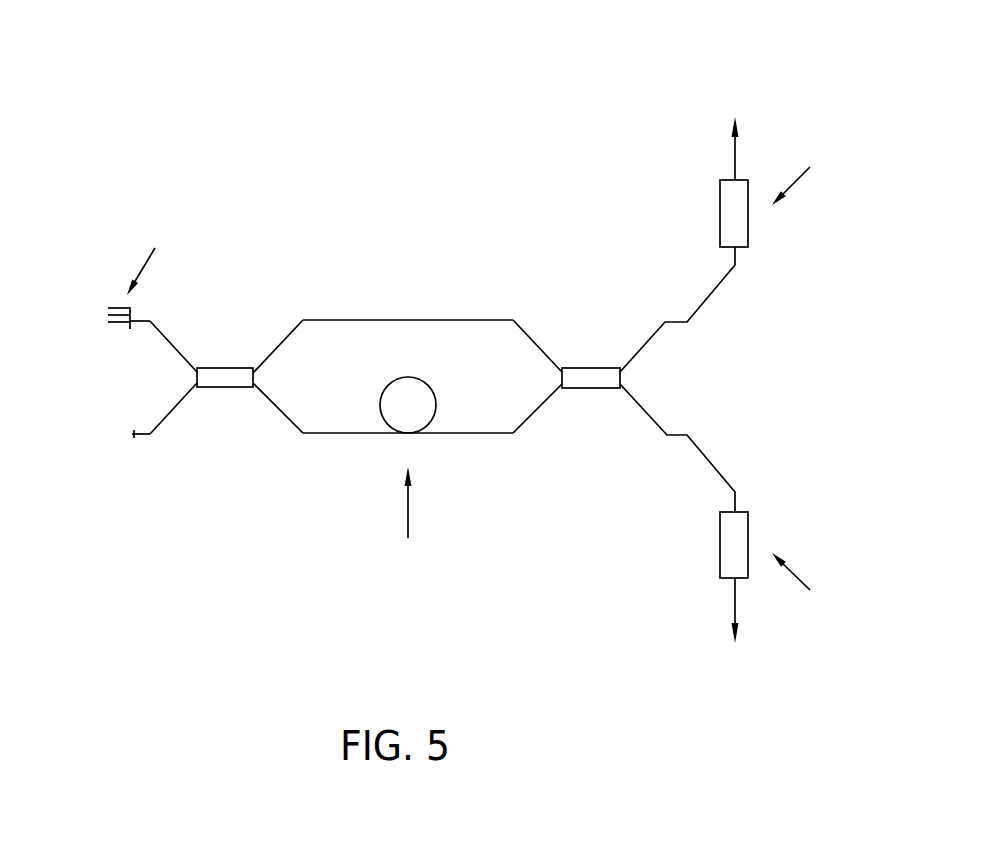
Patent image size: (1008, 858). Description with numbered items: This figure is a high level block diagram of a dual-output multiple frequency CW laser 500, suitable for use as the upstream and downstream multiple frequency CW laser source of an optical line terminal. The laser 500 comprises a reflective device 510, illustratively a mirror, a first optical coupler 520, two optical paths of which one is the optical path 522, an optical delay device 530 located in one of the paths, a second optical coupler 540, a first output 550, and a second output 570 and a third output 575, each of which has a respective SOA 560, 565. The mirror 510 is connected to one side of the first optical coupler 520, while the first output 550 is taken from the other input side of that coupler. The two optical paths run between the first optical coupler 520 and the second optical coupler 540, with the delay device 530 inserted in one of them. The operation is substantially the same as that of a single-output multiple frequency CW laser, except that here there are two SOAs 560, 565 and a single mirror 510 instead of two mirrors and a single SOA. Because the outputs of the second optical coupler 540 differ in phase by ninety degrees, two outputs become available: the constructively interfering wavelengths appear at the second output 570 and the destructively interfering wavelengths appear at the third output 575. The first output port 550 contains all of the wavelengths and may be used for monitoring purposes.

The dual-output multiple frequency CW laser 500 is at (606, 672).
The reflective device 510 is at (112, 298).
The first optical coupler 520 is at (237, 368).
The optical path 522 is at (357, 320).
The optical delay device 530 is at (389, 385).
The second optical coupler 540 is at (590, 368).
The first output 550 is at (141, 434).
The SOA 560 is at (720, 222).
The SOA 565 is at (720, 542).
The second output 570 is at (803, 84).
The third output 575 is at (803, 672).